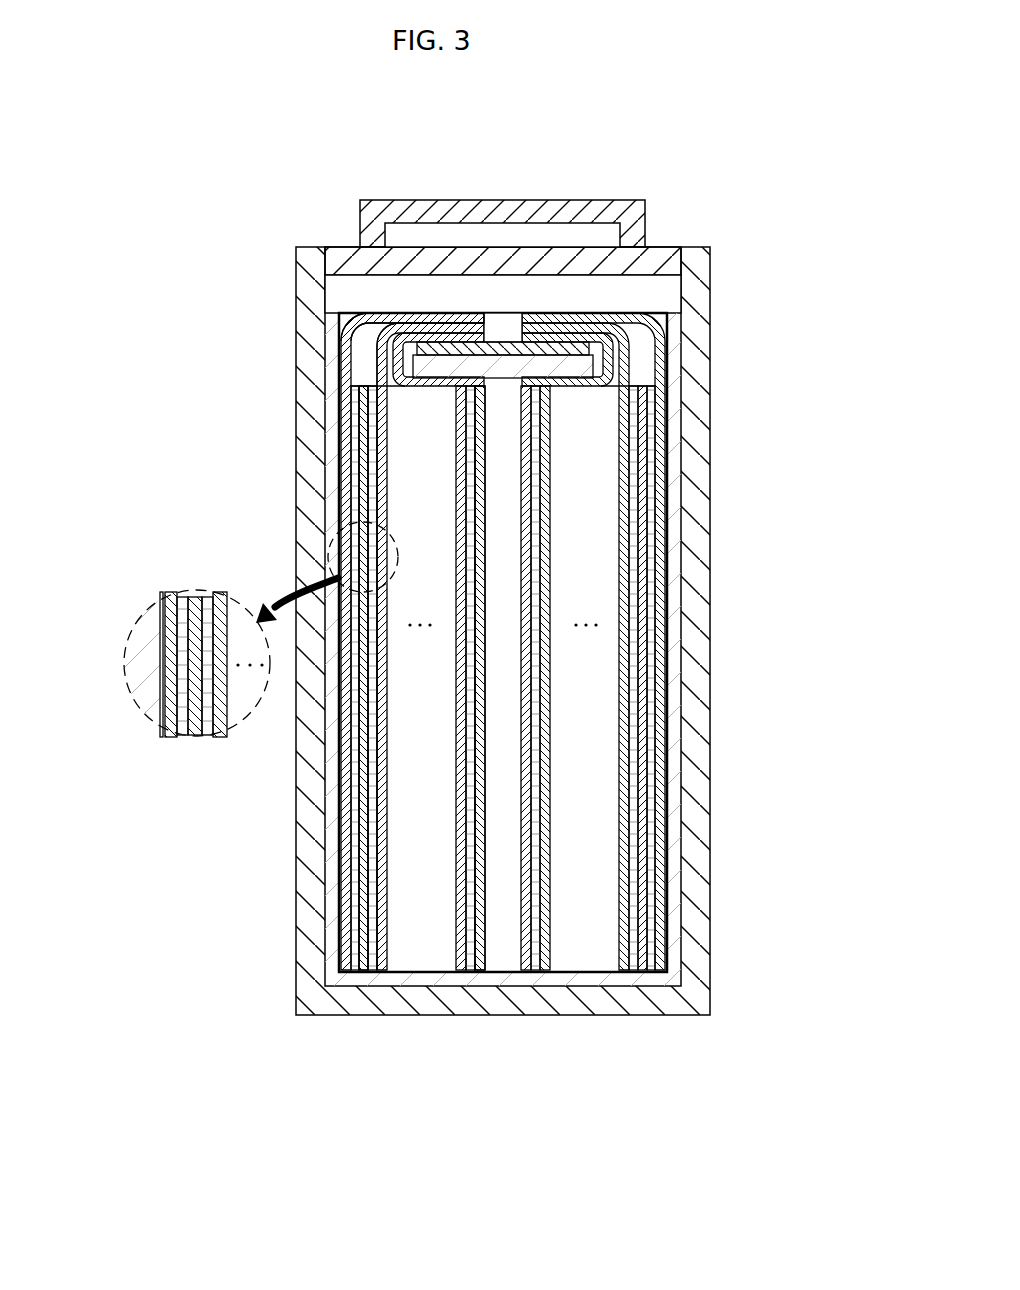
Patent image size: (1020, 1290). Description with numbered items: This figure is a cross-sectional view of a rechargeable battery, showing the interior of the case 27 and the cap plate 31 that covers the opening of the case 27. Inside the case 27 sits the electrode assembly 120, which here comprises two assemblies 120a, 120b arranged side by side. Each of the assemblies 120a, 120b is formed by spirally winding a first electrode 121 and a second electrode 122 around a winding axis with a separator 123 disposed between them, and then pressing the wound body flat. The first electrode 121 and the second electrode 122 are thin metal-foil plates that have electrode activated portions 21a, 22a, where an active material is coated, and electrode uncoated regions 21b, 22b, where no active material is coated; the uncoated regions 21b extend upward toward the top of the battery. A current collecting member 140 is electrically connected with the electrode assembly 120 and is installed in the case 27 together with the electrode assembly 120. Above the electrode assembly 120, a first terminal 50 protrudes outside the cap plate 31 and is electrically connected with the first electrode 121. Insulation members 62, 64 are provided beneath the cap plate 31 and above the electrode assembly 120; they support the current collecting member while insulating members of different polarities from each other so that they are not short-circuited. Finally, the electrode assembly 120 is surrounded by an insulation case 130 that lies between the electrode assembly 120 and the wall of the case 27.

The electrode activated portion 21a is at (750, 1074).
The electrode uncoated region 21b is at (588, 333).
The electrode activated portion 22a is at (683, 1074).
The electrode uncoated region 22b is at (284, 678).
The case 27 is at (305, 1000).
The cap plate 31 is at (342, 261).
The first terminal 50 is at (602, 210).
The insulation member 62 is at (667, 293).
The insulation member 64 is at (578, 366).
The electrode assembly 120 is at (503, 737).
The assembly 120a is at (431, 958).
The assembly 120b is at (580, 958).
The first electrode 121 is at (123, 282).
The second electrode 122 is at (123, 393).
The separator 123 is at (210, 598).
The insulation case 130 is at (144, 632).
The current collecting member 140 is at (573, 350).